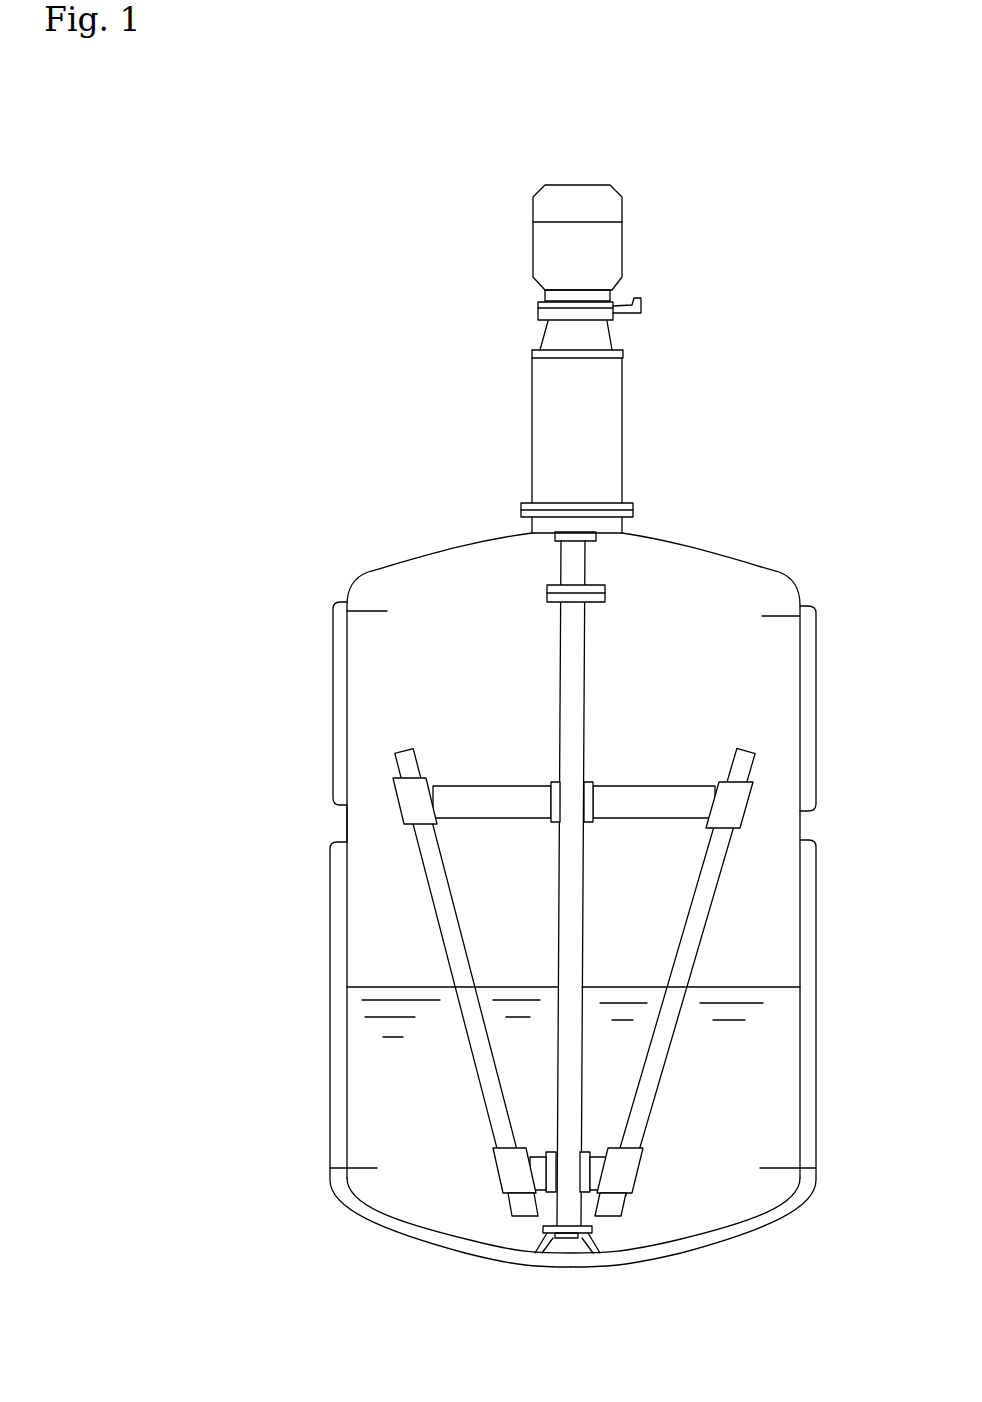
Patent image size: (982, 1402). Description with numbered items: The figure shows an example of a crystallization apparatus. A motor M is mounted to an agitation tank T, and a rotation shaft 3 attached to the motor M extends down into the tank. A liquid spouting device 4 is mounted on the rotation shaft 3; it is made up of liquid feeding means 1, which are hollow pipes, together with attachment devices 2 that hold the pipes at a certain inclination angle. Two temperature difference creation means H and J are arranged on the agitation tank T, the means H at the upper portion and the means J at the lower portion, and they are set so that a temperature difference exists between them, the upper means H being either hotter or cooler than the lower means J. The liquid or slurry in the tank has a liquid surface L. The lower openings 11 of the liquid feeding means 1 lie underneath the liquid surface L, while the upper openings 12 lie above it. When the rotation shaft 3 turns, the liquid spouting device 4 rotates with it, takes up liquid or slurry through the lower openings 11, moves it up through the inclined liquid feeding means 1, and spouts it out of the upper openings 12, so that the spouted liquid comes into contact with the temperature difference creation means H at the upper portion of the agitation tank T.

The liquid feeding means 1 is at (668, 1050).
The attachment devices 2 is at (486, 783).
The rotation shaft 3 is at (588, 653).
The liquid spouting device 4 is at (385, 852).
The lower openings 11 is at (523, 1217).
The upper openings 12 is at (402, 747).
The motor M is at (622, 252).
The agitation tank T is at (760, 566).
The temperature difference creation means H is at (812, 726).
The temperature difference creation means J is at (806, 1092).
The liquid surface L is at (741, 985).